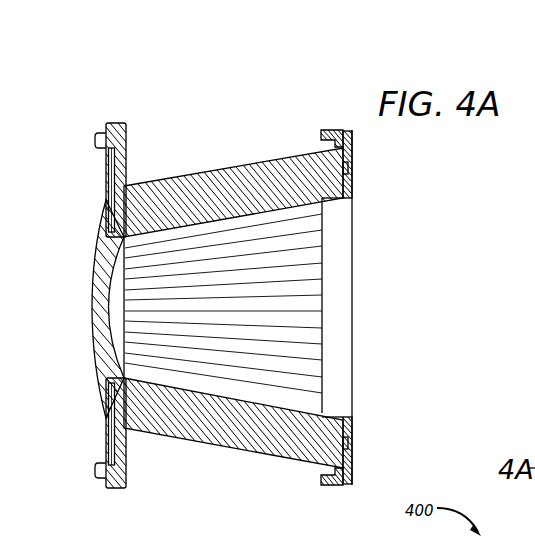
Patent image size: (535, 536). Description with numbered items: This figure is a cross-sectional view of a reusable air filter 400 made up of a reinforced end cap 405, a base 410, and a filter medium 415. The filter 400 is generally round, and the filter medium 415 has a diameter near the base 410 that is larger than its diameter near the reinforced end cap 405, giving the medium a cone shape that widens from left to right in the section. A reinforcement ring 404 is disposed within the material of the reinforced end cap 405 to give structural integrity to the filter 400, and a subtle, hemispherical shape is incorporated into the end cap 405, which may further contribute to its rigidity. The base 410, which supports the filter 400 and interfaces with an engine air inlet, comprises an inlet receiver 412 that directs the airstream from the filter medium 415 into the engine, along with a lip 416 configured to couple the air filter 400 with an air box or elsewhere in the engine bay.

The reusable air filter 400 is at (150, 92).
The reinforcement ring 404 is at (108, 180).
The reinforced end cap 405 is at (95, 348).
The base 410 is at (352, 152).
The inlet receiver 412 is at (338, 318).
The filter medium 415 is at (220, 250).
The lip 416 is at (327, 128).